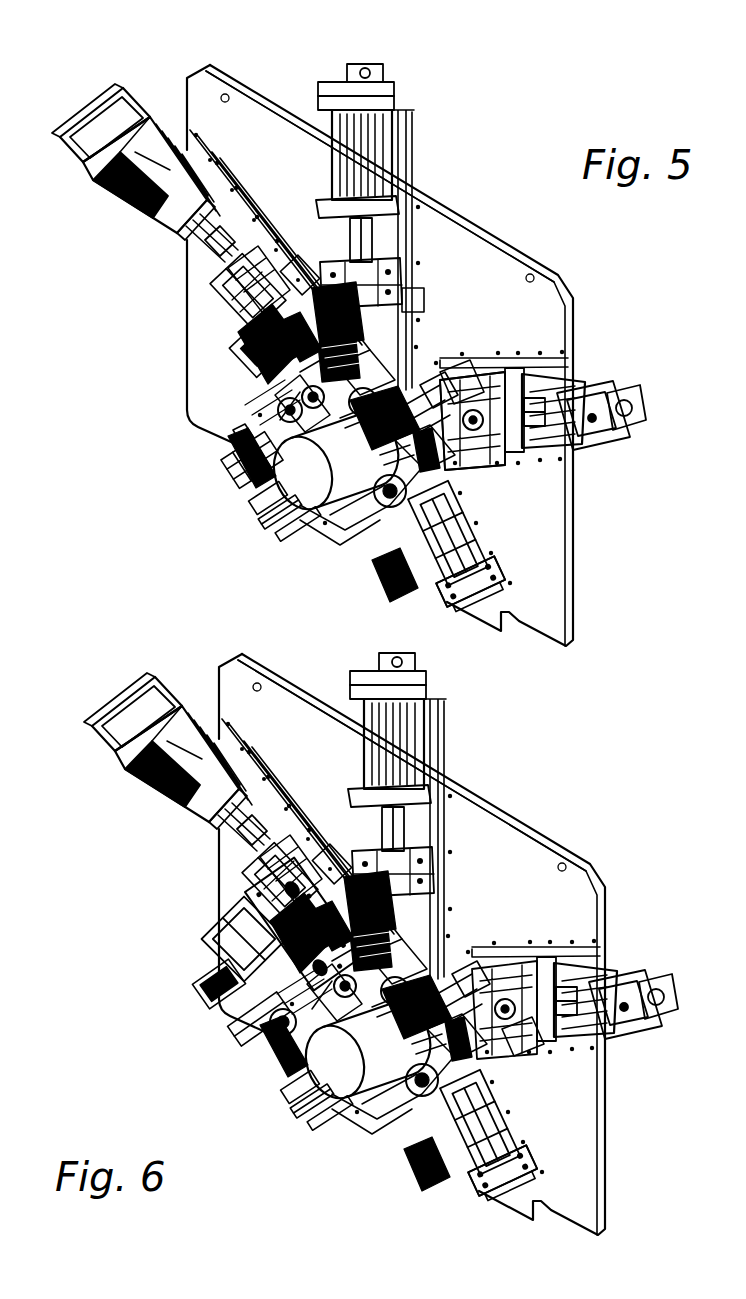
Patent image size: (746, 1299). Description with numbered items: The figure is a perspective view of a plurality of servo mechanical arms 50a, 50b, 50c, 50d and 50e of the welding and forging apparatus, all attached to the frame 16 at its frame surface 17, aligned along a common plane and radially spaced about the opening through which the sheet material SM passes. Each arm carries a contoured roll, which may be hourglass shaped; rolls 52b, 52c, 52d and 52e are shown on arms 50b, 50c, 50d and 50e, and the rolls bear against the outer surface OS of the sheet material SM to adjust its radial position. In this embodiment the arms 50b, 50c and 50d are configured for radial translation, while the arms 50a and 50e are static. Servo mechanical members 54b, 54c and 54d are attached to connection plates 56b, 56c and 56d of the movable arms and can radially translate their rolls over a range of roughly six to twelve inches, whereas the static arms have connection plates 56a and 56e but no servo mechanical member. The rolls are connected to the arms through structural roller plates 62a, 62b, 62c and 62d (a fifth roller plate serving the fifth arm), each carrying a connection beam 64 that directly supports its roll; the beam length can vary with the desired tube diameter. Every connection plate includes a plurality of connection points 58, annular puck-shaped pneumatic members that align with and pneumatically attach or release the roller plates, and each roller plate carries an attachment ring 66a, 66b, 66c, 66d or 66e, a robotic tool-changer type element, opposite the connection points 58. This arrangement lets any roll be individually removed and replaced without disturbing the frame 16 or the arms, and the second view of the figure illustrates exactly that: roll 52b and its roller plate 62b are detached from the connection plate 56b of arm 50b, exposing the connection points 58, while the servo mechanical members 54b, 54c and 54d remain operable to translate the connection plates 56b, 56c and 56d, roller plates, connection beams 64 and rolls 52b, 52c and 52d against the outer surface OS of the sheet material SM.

In FIG. 5, the frame 16 is at (196, 88).
In FIG. 6, the frame 16 is at (383, 933).
In FIG. 5, the frame surface 17 is at (267, 138).
In FIG. 6, the frame surface 17 is at (444, 917).
In FIG. 5, the servo mechanical member 54b is at (153, 110).
In FIG. 5, the servo mechanical member 54c is at (390, 133).
In FIG. 5, the servo mechanical member 54d is at (583, 393).
In FIG. 5, the servo mechanical arm 50a is at (273, 512).
In FIG. 6, the servo mechanical arm 50a is at (270, 1123).
In FIG. 5, the servo mechanical arm 50b is at (247, 317).
In FIG. 6, the servo mechanical arm 50b is at (230, 829).
In FIG. 5, the servo mechanical arm 50c is at (406, 243).
In FIG. 6, the servo mechanical arm 50c is at (468, 839).
In FIG. 5, the servo mechanical arm 50d is at (522, 373).
In FIG. 6, the servo mechanical arm 50d is at (571, 917).
In FIG. 5, the servo mechanical arm 50e is at (480, 583).
In FIG. 6, the servo mechanical arm 50e is at (570, 1181).
In FIG. 5, the connection plate 56a is at (293, 520).
In FIG. 6, the connection plate 56a is at (279, 1149).
In FIG. 5, the connection plate 56b is at (227, 273).
In FIG. 6, the connection plate 56b is at (193, 860).
In FIG. 5, the connection plate 56c is at (333, 260).
In FIG. 5, the connection plate 56d is at (493, 457).
In FIG. 5, the connection plate 56e is at (453, 603).
In FIG. 5, the roller plate 62a is at (263, 500).
In FIG. 5, the roller plate 62b is at (243, 320).
In FIG. 6, the roller plate 62b is at (181, 939).
In FIG. 5, the roller plate 62c is at (416, 300).
In FIG. 5, the roller plate 62d is at (470, 375).
In FIG. 5, the contoured roll 52b is at (287, 410).
In FIG. 6, the contoured roll 52b is at (223, 1069).
In FIG. 5, the contoured roll 52c is at (300, 267).
In FIG. 6, the contoured roll 52c is at (328, 819).
In FIG. 5, the contoured roll 52d is at (430, 385).
In FIG. 6, the contoured roll 52d is at (533, 906).
In FIG. 5, the contoured roll 52e is at (416, 508).
In FIG. 6, the contoured roll 52e is at (531, 1123).
In FIG. 5, the attachment ring 66a is at (233, 455).
In FIG. 6, the attachment ring 66b is at (160, 984).
In FIG. 6, the attachment ring 66c is at (466, 832).
In FIG. 6, the attachment ring 66d is at (589, 1055).
In FIG. 6, the attachment ring 66e is at (569, 1217).
In FIG. 6, the connection points 58 is at (225, 924).
In FIG. 6, the connection beam 64 is at (348, 1094).
In FIG. 5, the sheet material SM is at (290, 468).
In FIG. 6, the sheet material SM is at (367, 1111).
In FIG. 5, the outer surface OS is at (240, 453).
In FIG. 6, the outer surface OS is at (349, 1162).